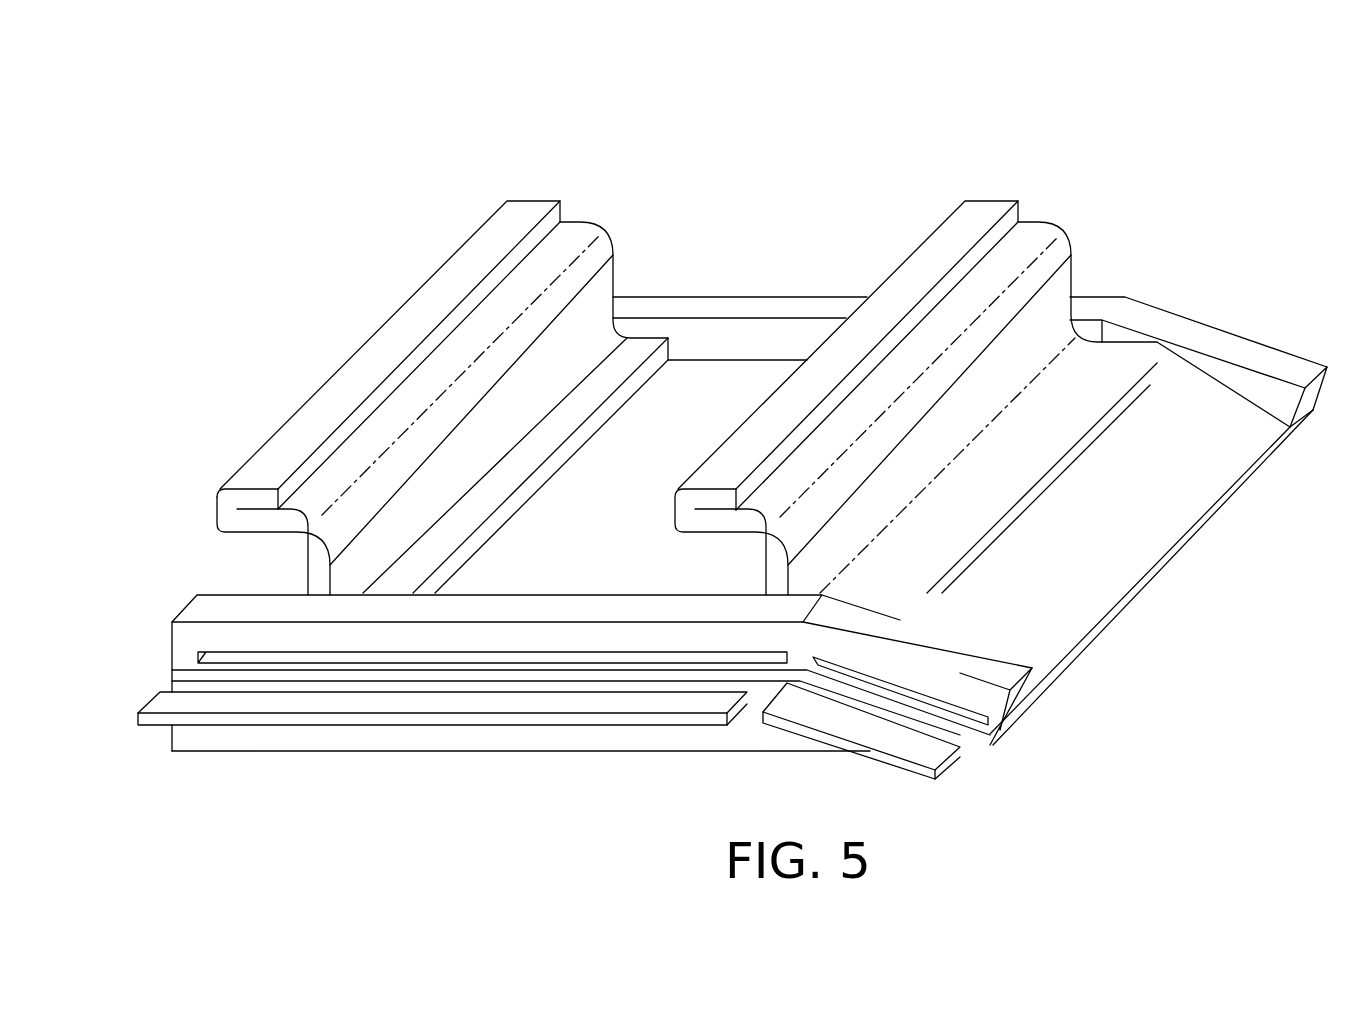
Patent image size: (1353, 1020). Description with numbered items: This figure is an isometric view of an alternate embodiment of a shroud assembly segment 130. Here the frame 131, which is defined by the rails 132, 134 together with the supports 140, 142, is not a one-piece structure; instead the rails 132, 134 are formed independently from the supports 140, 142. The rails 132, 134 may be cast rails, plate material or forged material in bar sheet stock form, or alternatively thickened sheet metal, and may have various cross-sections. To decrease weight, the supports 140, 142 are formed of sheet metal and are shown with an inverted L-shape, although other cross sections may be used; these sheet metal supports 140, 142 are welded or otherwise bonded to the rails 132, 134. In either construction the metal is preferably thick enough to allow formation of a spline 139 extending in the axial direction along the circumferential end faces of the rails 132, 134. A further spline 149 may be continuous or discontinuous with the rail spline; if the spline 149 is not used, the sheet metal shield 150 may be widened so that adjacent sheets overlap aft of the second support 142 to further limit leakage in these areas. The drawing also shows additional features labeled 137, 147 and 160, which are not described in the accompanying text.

The shroud assembly segment 130 is at (1003, 167).
The frame 131 is at (207, 478).
The rail 132 is at (458, 608).
The rail 134 is at (687, 310).
The lower bar 137 is at (187, 722).
The spline 139 is at (217, 657).
The support 140 is at (600, 268).
The support 142 is at (1055, 270).
The angled bar 147 is at (937, 745).
The spline 149 is at (972, 717).
The sheet metal shield 150 is at (600, 470).
The lower plate 160 is at (543, 735).